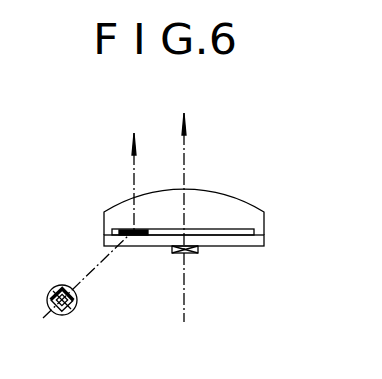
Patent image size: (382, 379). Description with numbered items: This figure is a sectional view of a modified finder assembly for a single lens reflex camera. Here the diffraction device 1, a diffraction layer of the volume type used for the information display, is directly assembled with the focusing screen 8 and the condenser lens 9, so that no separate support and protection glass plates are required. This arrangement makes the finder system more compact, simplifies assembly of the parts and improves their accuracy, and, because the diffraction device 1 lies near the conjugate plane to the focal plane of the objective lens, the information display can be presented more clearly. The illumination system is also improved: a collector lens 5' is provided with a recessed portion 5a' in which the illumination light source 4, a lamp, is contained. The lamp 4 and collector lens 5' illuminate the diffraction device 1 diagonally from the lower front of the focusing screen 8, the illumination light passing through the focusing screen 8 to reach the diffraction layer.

The diffraction device 1 is at (122, 229).
The illumination light source 4 is at (65, 316).
The collector lens 5' is at (62, 278).
The recessed portion 5a' is at (85, 308).
The focusing screen 8 is at (253, 241).
The condenser lens 9 is at (247, 215).